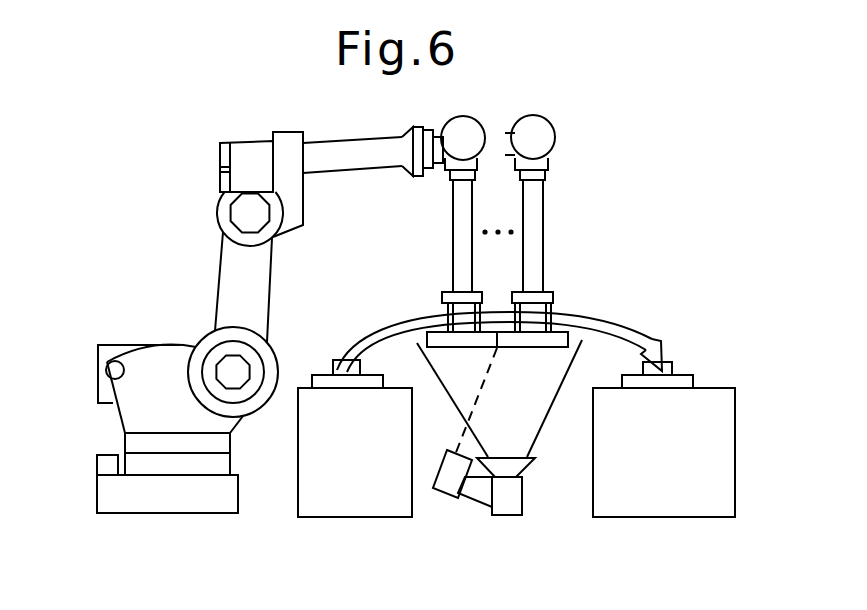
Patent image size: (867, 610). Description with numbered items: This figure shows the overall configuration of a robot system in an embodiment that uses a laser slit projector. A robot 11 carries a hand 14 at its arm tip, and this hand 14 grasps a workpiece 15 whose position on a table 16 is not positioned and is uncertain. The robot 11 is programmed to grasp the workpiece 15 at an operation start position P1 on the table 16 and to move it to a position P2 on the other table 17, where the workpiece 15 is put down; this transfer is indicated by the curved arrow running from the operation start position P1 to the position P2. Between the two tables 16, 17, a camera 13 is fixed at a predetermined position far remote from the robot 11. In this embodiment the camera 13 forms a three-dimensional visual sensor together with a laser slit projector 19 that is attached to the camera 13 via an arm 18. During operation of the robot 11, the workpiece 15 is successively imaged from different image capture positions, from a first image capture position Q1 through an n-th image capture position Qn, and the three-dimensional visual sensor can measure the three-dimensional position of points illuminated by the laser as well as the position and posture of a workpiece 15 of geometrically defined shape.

The robot 11 is at (136, 319).
The camera 13 is at (523, 498).
The hand 14 is at (485, 308).
The workpiece 15 is at (693, 377).
The table 16 is at (352, 502).
The table 17 is at (668, 502).
The arm 18 is at (477, 502).
The laser slit projector 19 is at (440, 493).
The operation start position P1 is at (344, 357).
The position P2 is at (658, 352).
The image capture position Q1 is at (458, 320).
The image capture position Qn is at (540, 323).